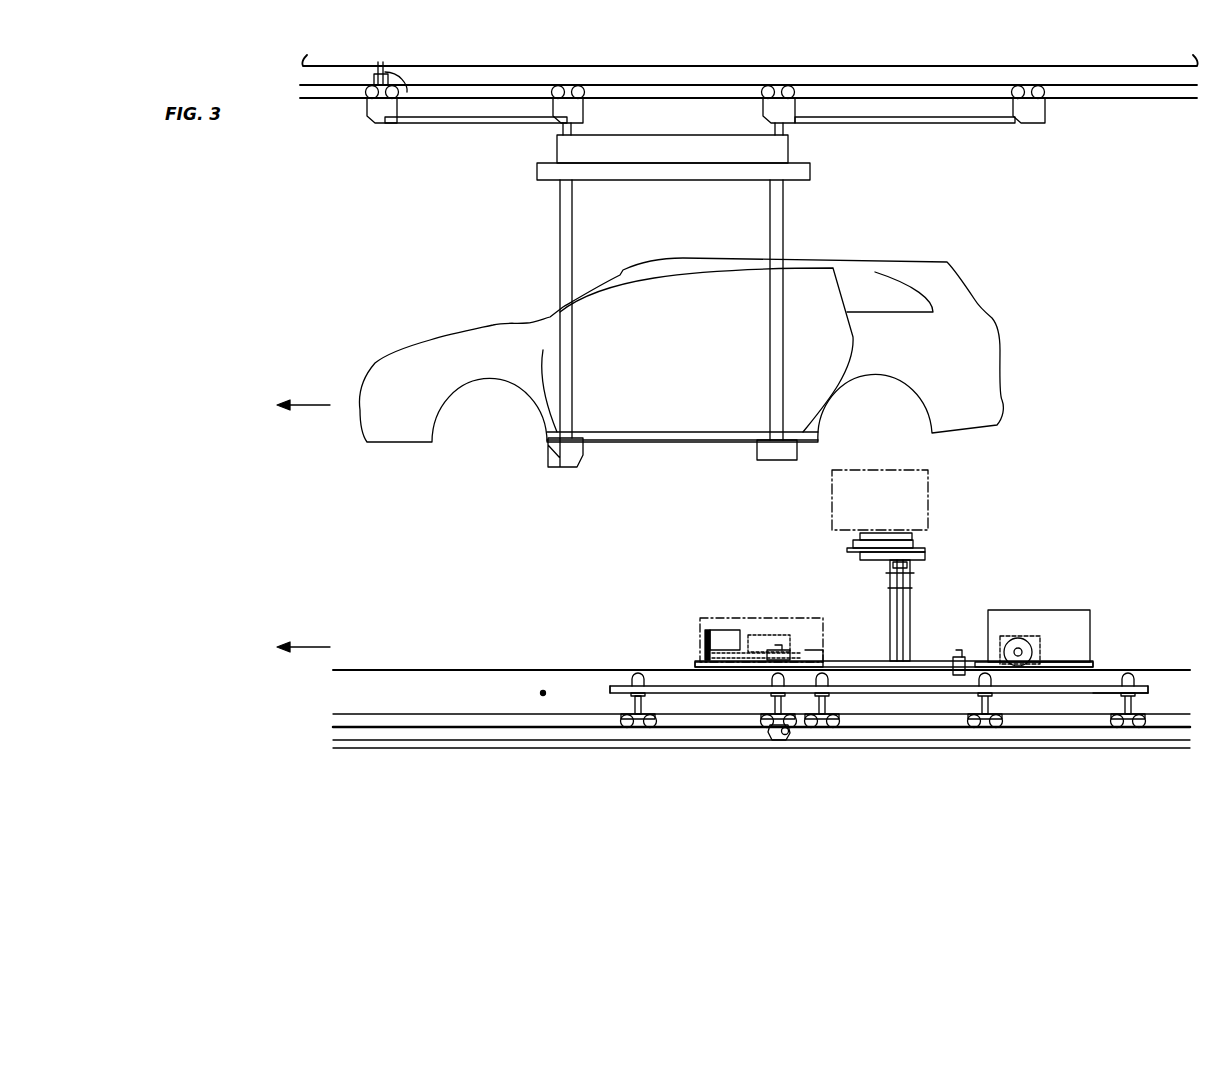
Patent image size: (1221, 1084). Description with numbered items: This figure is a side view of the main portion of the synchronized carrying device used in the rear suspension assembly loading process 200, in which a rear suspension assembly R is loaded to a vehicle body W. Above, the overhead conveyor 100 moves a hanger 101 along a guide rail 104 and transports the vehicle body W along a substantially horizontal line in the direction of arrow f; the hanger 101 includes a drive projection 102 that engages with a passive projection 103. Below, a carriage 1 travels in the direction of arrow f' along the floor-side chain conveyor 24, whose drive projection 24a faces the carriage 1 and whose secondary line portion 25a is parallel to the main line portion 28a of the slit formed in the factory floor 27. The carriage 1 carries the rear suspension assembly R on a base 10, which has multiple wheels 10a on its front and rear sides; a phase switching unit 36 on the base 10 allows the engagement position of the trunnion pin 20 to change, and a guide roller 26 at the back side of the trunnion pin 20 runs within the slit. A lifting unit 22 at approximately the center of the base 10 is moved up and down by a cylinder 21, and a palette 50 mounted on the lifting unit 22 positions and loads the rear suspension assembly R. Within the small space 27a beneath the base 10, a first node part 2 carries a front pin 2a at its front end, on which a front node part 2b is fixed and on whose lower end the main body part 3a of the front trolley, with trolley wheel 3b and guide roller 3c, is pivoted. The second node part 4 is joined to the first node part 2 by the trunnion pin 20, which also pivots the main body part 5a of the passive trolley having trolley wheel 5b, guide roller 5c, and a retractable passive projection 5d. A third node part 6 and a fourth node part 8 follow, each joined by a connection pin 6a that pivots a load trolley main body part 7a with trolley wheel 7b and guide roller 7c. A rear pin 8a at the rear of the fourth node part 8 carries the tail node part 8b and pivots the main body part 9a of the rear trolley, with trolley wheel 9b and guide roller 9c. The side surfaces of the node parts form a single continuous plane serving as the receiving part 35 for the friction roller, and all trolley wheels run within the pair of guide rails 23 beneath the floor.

The overhead conveyor 100 is at (1107, 104).
The hanger 101 is at (785, 226).
The drive projection 102 is at (397, 92).
The passive projection 103 is at (372, 84).
The guide rail 104 is at (465, 92).
The vehicle body W is at (986, 301).
The arrow f is at (303, 386).
The arrow f' is at (303, 625).
The rear suspension assembly loading process 200 is at (401, 511).
The rear suspension assembly R is at (933, 490).
The palette 50 is at (930, 533).
The lifting unit 22 is at (925, 556).
The cylinder 21 is at (905, 605).
The phase switching unit 36 is at (712, 616).
The trunnion pin 20 is at (748, 688).
The base 10 is at (945, 615).
The wheels 10a is at (1020, 648).
The second node part 4 is at (818, 662).
The third node part 6 is at (925, 661).
The connection pin 6a is at (866, 661).
The guide roller 26 is at (957, 657).
The fourth node part 8 is at (1154, 665).
The rear pin 8a is at (1150, 700).
The tail node part 8b is at (1141, 686).
The carriage 1 is at (608, 686).
The first node part 2 is at (688, 686).
The front pin 2a is at (633, 703).
The front node part 2b is at (626, 673).
The main body part 3a is at (632, 727).
The trolley wheel 3b is at (626, 727).
The guide roller 3c is at (662, 690).
The main body part 5a is at (757, 714).
The trolley wheel 5b is at (768, 727).
The guide roller 5c is at (798, 700).
The passive projection 5d is at (775, 740).
The drive projection 24a is at (778, 745).
The main body part 7a is at (928, 726).
The trolley wheel 7b is at (811, 728).
The guide roller 7c is at (830, 712).
The main body part 9a is at (1135, 751).
The trolley wheel 9b is at (1116, 728).
The guide roller 9c is at (1112, 712).
The receiving part 35 is at (1065, 700).
The factory floor 27 is at (350, 670).
The main line portion 28a is at (400, 670).
The floor-side chain conveyor 24 is at (505, 714).
The small space 27a is at (543, 690).
The guide rails 23 is at (490, 715).
The secondary line portion 25a is at (410, 748).